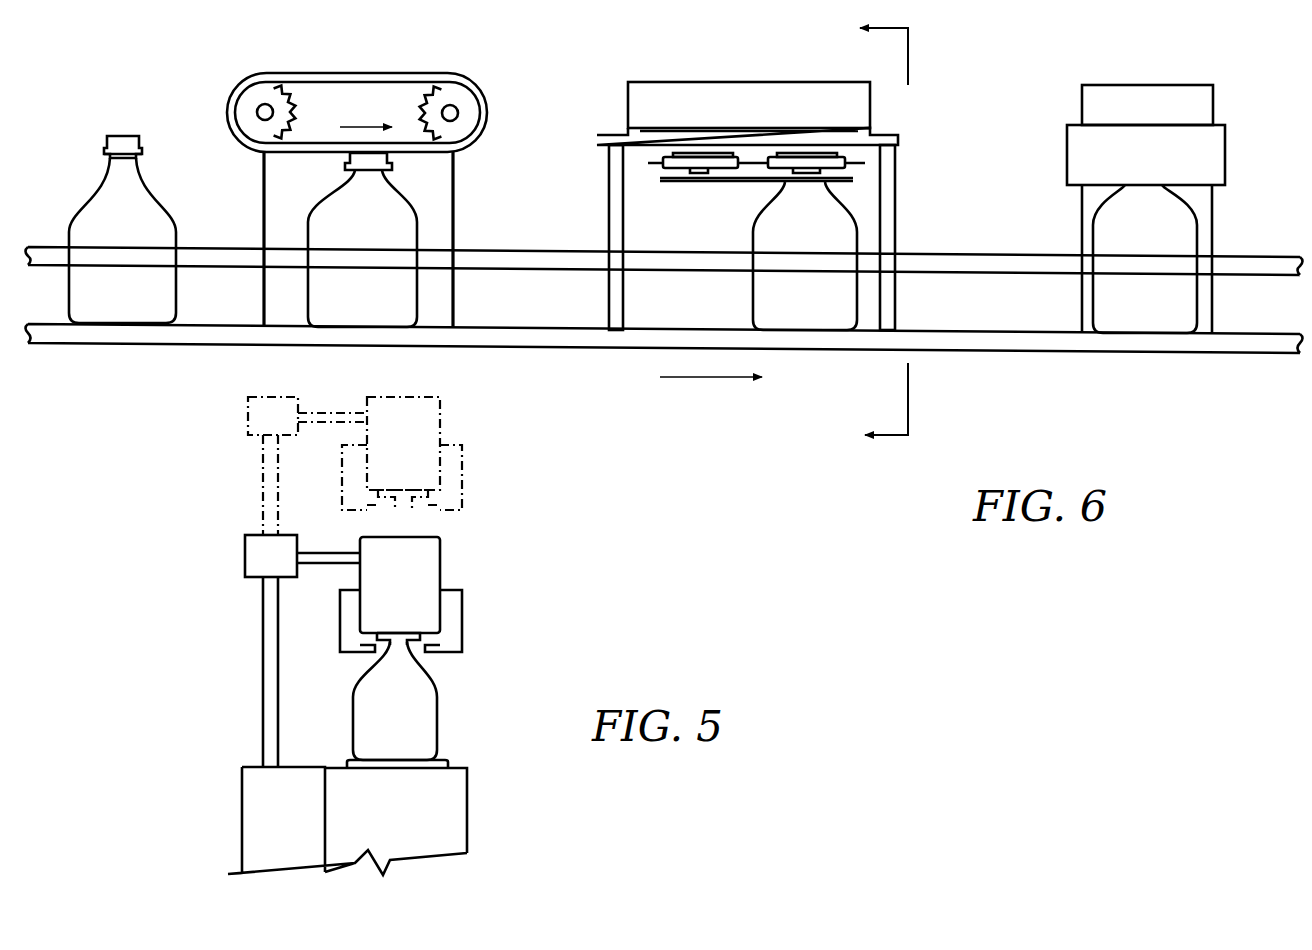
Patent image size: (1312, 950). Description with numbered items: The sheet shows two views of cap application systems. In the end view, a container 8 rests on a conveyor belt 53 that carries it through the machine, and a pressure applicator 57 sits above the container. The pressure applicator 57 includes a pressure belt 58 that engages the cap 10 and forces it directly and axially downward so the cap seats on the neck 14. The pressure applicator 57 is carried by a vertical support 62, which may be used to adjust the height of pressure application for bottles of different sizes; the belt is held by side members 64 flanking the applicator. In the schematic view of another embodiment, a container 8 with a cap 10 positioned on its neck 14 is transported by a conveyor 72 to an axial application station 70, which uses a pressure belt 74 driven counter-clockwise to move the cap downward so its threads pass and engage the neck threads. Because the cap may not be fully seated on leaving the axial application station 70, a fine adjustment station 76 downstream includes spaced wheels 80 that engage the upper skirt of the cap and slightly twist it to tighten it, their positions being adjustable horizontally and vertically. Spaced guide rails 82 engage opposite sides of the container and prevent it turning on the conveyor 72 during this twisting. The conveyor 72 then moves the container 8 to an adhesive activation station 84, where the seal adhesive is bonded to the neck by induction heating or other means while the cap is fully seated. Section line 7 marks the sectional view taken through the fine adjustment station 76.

In FIG. 6, the section line 7- 7 is at (884, 237).
In FIG. 6, the container 8 is at (135, 303).
In FIG. 5, the container 8 is at (417, 707).
In FIG. 6, the cap 10 is at (123, 135).
In FIG. 6, the neck 14 is at (108, 160).
In FIG. 5, the conveyor belt 53 is at (448, 758).
In FIG. 5, the pressure applicator 57 is at (422, 570).
In FIG. 5, the pressure belt 58 is at (440, 655).
In FIG. 5, the vertical support 62 is at (267, 698).
In FIG. 5, the clamp jaws 64 is at (452, 613).
In FIG. 6, the axial application station 70 is at (382, 177).
In FIG. 6, the conveyor 72 is at (953, 343).
In FIG. 6, the pressure belt 74 is at (335, 73).
In FIG. 6, the fine adjustment station 76 is at (882, 118).
In FIG. 6, the wheel 80 is at (680, 163).
In FIG. 6, the guide rails 82 is at (541, 258).
In FIG. 6, the adhesive activation station 84 is at (1222, 107).